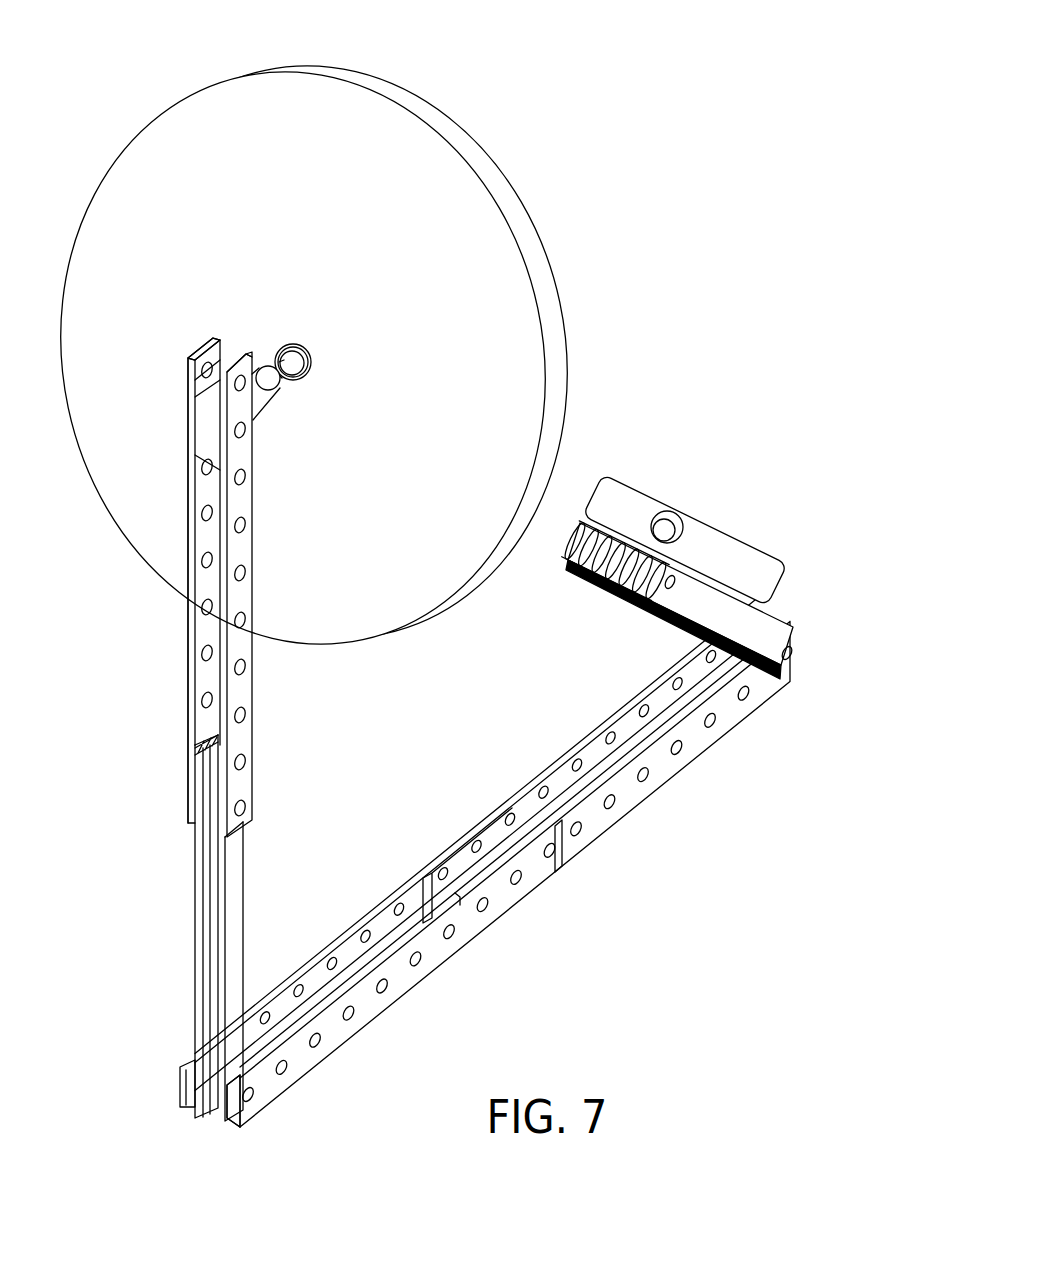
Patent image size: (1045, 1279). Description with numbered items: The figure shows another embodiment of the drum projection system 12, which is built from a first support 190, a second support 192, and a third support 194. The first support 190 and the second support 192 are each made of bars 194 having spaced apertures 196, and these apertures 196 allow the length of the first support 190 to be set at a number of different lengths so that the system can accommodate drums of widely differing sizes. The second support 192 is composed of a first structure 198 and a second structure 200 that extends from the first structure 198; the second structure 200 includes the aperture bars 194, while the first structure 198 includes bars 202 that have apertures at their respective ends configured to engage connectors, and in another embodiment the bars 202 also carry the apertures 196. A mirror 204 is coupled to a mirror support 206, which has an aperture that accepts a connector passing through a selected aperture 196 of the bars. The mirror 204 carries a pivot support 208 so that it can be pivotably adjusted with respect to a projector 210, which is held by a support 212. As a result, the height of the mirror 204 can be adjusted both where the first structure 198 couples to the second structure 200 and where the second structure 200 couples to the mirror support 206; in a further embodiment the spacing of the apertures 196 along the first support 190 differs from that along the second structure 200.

The system 12 is at (655, 150).
The first support 190 is at (592, 858).
The second support 192 is at (178, 873).
The bars 194 is at (190, 670).
The apertures 196 is at (246, 571).
The first structure 198 is at (235, 872).
The second structure 200 is at (178, 508).
The bars 202 is at (242, 913).
The mirror 204 is at (556, 290).
The mirror support 206 is at (205, 414).
The pivot support 208 is at (293, 343).
The projector 210 is at (736, 521).
The support 212 is at (742, 615).